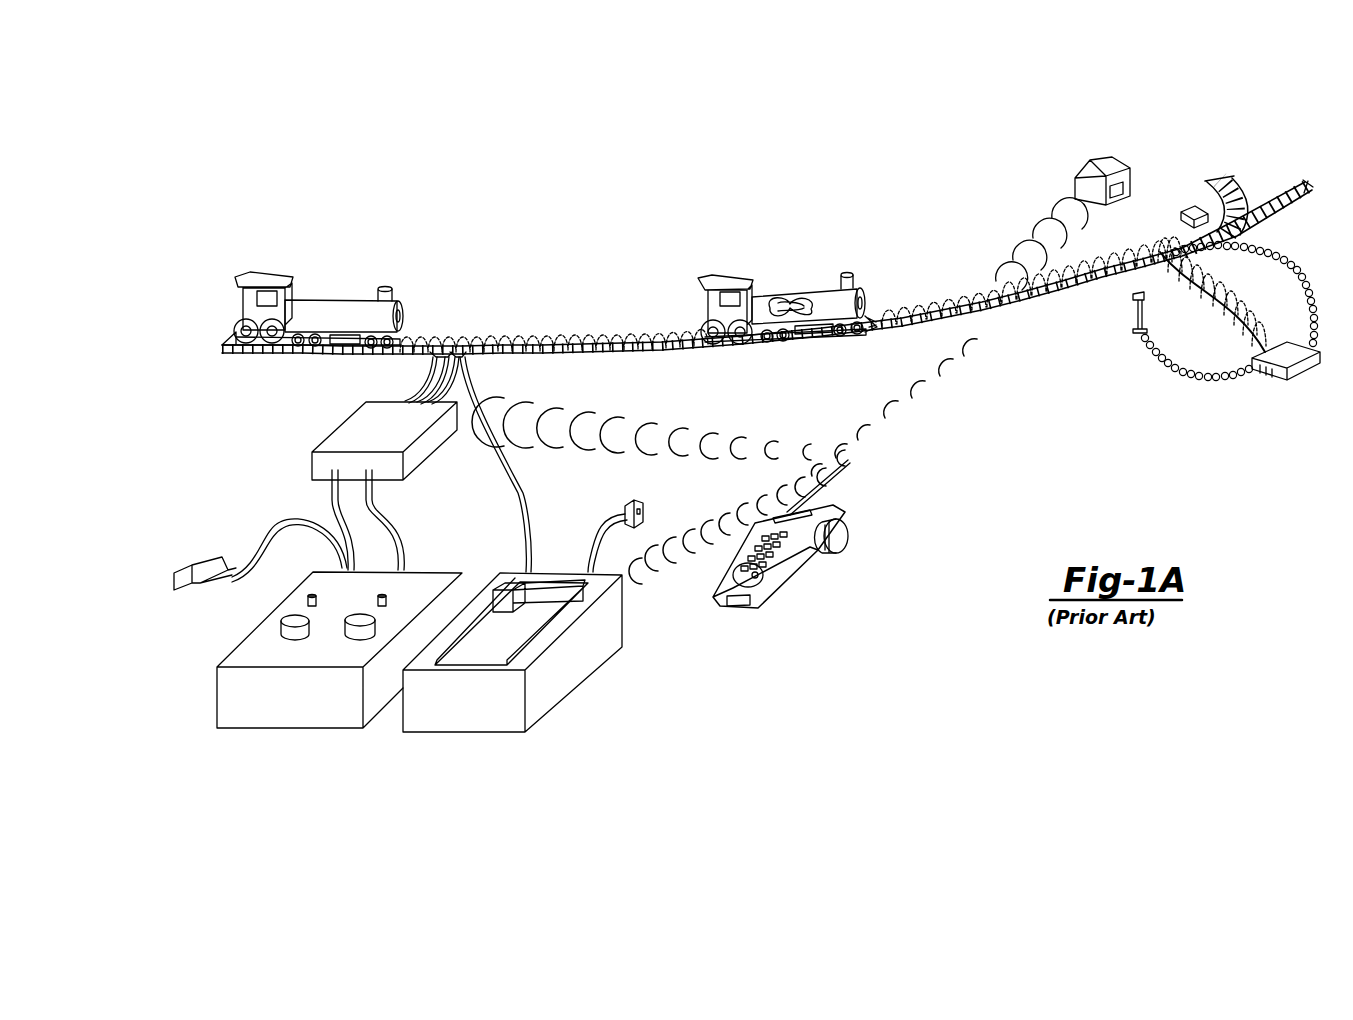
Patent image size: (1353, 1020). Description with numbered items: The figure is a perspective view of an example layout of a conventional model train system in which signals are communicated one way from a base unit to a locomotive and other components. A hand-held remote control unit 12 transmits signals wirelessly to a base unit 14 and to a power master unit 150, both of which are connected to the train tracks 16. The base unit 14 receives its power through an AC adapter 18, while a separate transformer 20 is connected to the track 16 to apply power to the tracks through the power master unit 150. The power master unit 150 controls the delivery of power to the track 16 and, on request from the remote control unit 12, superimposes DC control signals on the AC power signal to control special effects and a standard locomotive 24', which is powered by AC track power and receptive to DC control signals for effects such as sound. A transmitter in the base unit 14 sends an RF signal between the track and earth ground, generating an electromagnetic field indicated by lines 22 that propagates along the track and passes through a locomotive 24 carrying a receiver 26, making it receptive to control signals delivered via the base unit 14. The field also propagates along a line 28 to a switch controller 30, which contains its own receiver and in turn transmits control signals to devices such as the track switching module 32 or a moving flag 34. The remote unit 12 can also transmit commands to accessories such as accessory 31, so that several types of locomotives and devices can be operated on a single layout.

The hand-held remote control unit 12 is at (848, 527).
The base unit 14 is at (482, 734).
The train tracks 16 is at (448, 323).
The AC adapter 18 is at (625, 507).
The transformer 20 is at (297, 730).
The electromagnetic field lines 22 is at (606, 324).
The locomotive 24 is at (787, 279).
The standard locomotive 24' is at (312, 280).
The receiver 26 is at (792, 303).
The line 28 is at (1228, 300).
The switch controller 30 is at (1270, 374).
The accessory 31 is at (1105, 180).
The track switching module 32 is at (1188, 215).
The moving flag 34 is at (1136, 340).
The power master unit 150 is at (362, 425).